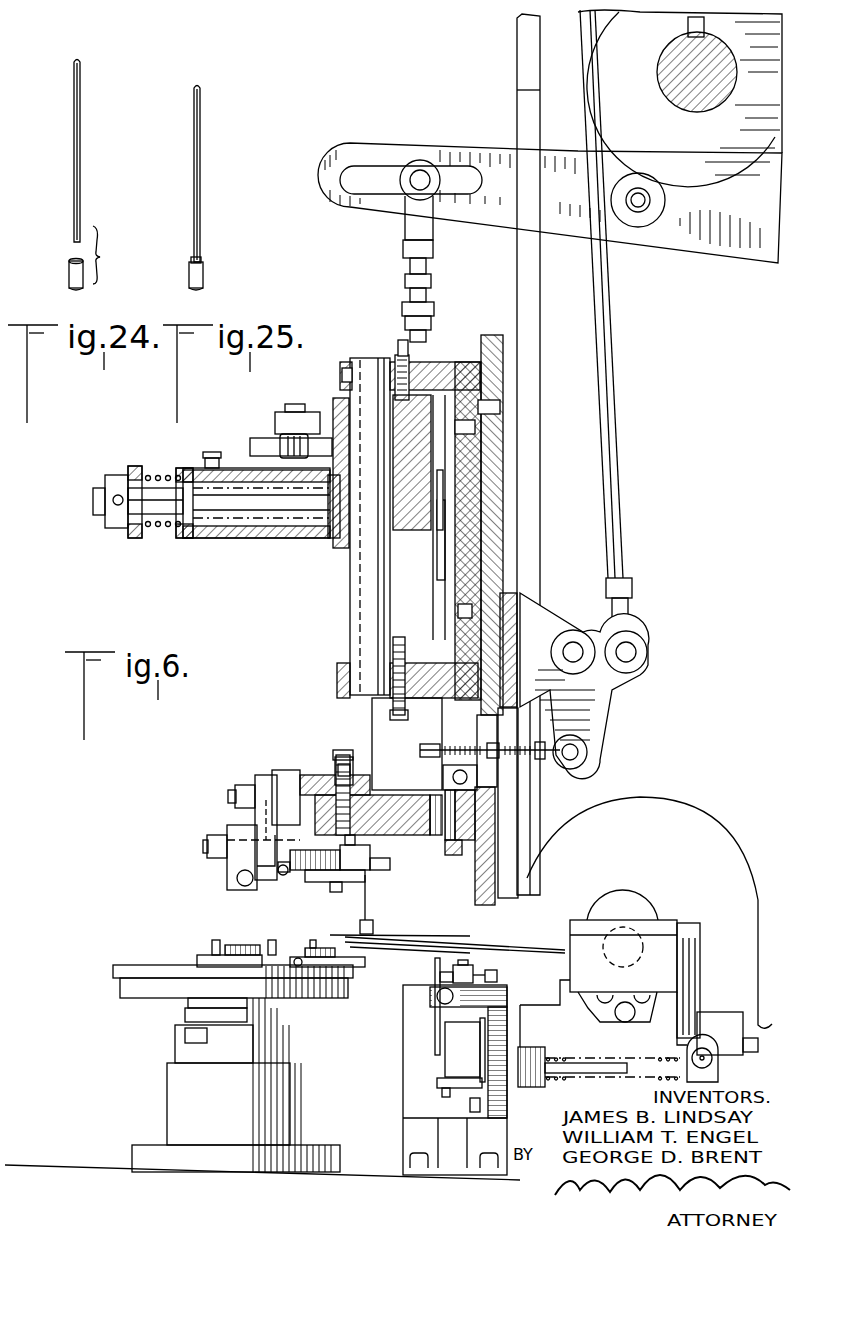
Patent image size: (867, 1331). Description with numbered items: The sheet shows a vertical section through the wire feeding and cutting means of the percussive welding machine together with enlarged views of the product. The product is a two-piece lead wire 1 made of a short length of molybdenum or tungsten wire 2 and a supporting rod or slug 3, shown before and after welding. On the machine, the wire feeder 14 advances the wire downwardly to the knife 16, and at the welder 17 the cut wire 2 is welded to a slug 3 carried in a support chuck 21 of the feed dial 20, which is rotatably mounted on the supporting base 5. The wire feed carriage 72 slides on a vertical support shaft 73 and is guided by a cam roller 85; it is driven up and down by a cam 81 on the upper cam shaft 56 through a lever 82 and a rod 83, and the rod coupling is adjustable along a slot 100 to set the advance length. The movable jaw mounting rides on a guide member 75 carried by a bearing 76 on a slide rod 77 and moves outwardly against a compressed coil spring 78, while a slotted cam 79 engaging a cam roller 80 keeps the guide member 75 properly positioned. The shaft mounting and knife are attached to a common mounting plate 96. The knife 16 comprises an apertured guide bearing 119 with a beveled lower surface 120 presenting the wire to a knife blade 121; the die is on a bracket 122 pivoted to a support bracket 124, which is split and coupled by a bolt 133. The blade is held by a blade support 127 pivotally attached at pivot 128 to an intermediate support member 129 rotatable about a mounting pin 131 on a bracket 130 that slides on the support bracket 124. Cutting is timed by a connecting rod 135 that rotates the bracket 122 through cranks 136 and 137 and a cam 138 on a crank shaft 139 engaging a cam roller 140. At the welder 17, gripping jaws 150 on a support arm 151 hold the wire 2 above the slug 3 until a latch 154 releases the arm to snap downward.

In FIG. 25, the two-piece lead wire 1 is at (205, 172).
In FIG. 24, the wire 2 is at (92, 126).
In FIG. 25, the wire 2 is at (207, 128).
In FIG. 24, the slug 3 is at (84, 275).
In FIG. 25, the slug 3 is at (204, 278).
In FIG. 6, the supporting base 5 is at (337, 1190).
In FIG. 6, the wire feeder 14 is at (100, 478).
In FIG. 6, the knife 16 is at (230, 798).
In FIG. 6, the welder 17 is at (597, 905).
In FIG. 6, the feed dial 20 is at (172, 970).
In FIG. 6, the support chuck 21 is at (182, 897).
In FIG. 6, the upper cam shaft 56 is at (722, 86).
In FIG. 6, the wire feed carriage 72 is at (405, 437).
In FIG. 6, the vertical support shaft 73 is at (362, 610).
In FIG. 6, the guide member 75 is at (193, 471).
In FIG. 6, the bearing 76 is at (272, 540).
In FIG. 6, the slide rod 77 is at (163, 503).
In FIG. 6, the compressed coil spring 78 is at (157, 472).
In FIG. 6, the slotted cam 79 is at (255, 440).
In FIG. 6, the cam roller 80 is at (280, 445).
In FIG. 6, the cam 81 is at (680, 98).
In FIG. 6, the lever 82 is at (578, 207).
In FIG. 6, the rod 83 is at (423, 300).
In FIG. 6, the cam roller 85 is at (417, 523).
In FIG. 6, the mounting plate 96 is at (499, 571).
In FIG. 6, the slot 100 is at (372, 166).
In FIG. 6, the apertured guide bearing 119 is at (392, 866).
In FIG. 6, the beveled lower surface 120 is at (362, 870).
In FIG. 6, the knife blade 121 is at (368, 900).
In FIG. 6, the bracket 122 is at (371, 766).
In FIG. 6, the support bracket 124 is at (468, 752).
In FIG. 6, the blade support 127 is at (318, 874).
In FIG. 6, the pivot 128 is at (309, 851).
In FIG. 6, the intermediate support member 129 is at (240, 852).
In FIG. 6, the bracket 130 is at (240, 826).
In FIG. 6, the mounting pin 131 is at (258, 878).
In FIG. 6, the bolt 133 is at (345, 760).
In FIG. 6, the connecting rod 135 is at (626, 518).
In FIG. 6, the crank 136 is at (585, 712).
In FIG. 6, the crank 137 is at (470, 760).
In FIG. 6, the cam 138 is at (470, 845).
In FIG. 6, the crank shaft 139 is at (456, 885).
In FIG. 6, the cam roller 140 is at (335, 832).
In FIG. 6, the gripping jaws 150 is at (500, 943).
In FIG. 6, the support arm 151 is at (632, 956).
In FIG. 6, the latch 154 is at (498, 975).